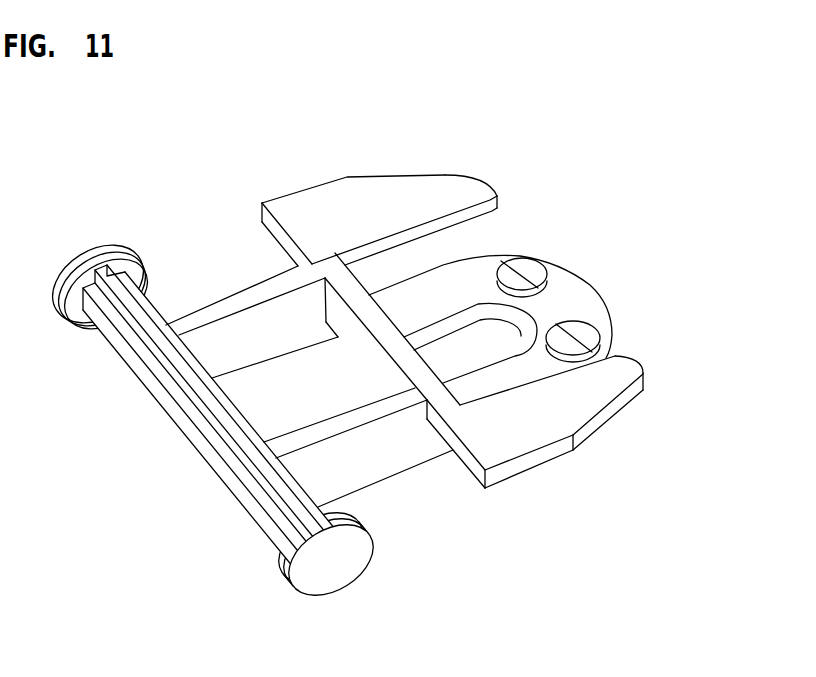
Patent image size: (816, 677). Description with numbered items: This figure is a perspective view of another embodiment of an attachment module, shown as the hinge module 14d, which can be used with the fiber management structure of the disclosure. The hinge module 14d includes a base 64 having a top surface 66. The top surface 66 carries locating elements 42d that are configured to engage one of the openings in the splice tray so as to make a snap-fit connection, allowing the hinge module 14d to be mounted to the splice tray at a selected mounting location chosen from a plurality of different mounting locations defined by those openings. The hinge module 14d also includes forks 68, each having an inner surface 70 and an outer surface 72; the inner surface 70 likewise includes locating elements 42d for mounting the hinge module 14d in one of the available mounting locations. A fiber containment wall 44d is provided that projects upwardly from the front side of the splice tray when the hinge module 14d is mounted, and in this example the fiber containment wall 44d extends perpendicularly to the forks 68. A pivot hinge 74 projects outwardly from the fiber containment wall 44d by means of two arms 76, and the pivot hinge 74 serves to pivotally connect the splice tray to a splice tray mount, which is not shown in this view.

The hinge module 14d is at (597, 137).
The locating elements 42d is at (498, 210).
The fiber containment wall 44d is at (363, 351).
The base 64 is at (597, 287).
The top surface 66 is at (488, 288).
The forks 68 is at (434, 174).
The inner surface 70 is at (392, 255).
The outer surface 72 is at (346, 192).
The pivot hinge 74 is at (272, 518).
The arms 76 is at (215, 322).